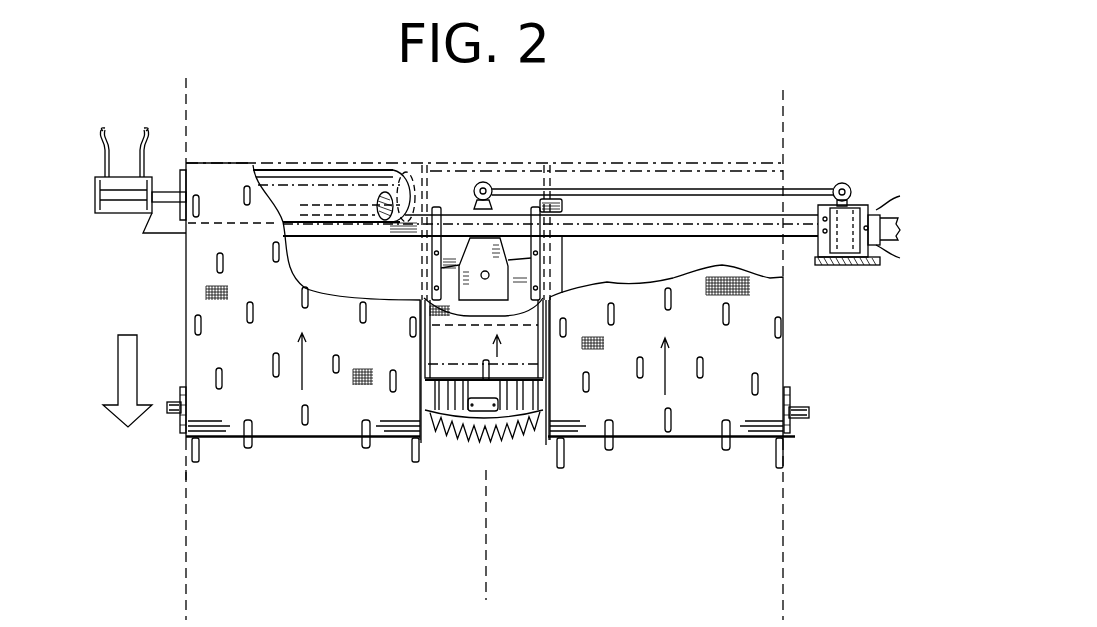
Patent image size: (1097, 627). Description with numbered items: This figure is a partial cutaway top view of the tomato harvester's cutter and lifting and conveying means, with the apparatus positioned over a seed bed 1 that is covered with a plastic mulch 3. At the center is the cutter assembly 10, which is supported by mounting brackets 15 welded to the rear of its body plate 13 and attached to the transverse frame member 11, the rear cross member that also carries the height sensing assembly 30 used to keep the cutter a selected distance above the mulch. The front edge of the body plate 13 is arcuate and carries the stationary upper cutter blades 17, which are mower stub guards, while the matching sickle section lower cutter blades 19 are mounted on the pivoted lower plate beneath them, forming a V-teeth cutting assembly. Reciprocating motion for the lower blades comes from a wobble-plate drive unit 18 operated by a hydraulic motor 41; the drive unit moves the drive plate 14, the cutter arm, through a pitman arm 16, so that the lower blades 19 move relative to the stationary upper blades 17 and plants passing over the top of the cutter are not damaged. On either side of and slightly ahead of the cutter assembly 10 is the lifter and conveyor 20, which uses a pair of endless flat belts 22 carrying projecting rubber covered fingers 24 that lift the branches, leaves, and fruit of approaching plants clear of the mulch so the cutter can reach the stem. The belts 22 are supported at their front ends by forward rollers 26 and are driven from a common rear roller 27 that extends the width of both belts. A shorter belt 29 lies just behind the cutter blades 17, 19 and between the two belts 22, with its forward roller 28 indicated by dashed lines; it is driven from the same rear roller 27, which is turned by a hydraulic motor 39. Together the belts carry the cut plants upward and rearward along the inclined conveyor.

The seed bed 1 is at (457, 349).
The plastic mulch 3 is at (205, 508).
The cutter assembly 10 is at (485, 453).
The transverse frame member 11 is at (658, 232).
The body plate 13 is at (453, 268).
The drive plate 14 is at (493, 302).
The mounting brackets 15 is at (432, 276).
The pitman arm 16 is at (606, 187).
The upper cutter blades 17 is at (465, 440).
The wobble-plate drive unit 18 is at (862, 191).
The lower cutter blades 19 is at (488, 438).
The lifter and conveyor 20 is at (692, 462).
The endless flat belts 22 is at (224, 178).
The rubber covered fingers 24 is at (360, 320).
The forward rollers 26 is at (180, 396).
The rear roller 27 is at (330, 182).
The forward roller 28 is at (515, 350).
The shorter belt 29 is at (485, 349).
The height sensing assembly 30 is at (555, 258).
The hydraulic motor 39 is at (112, 217).
The hydraulic motor 41 is at (838, 228).